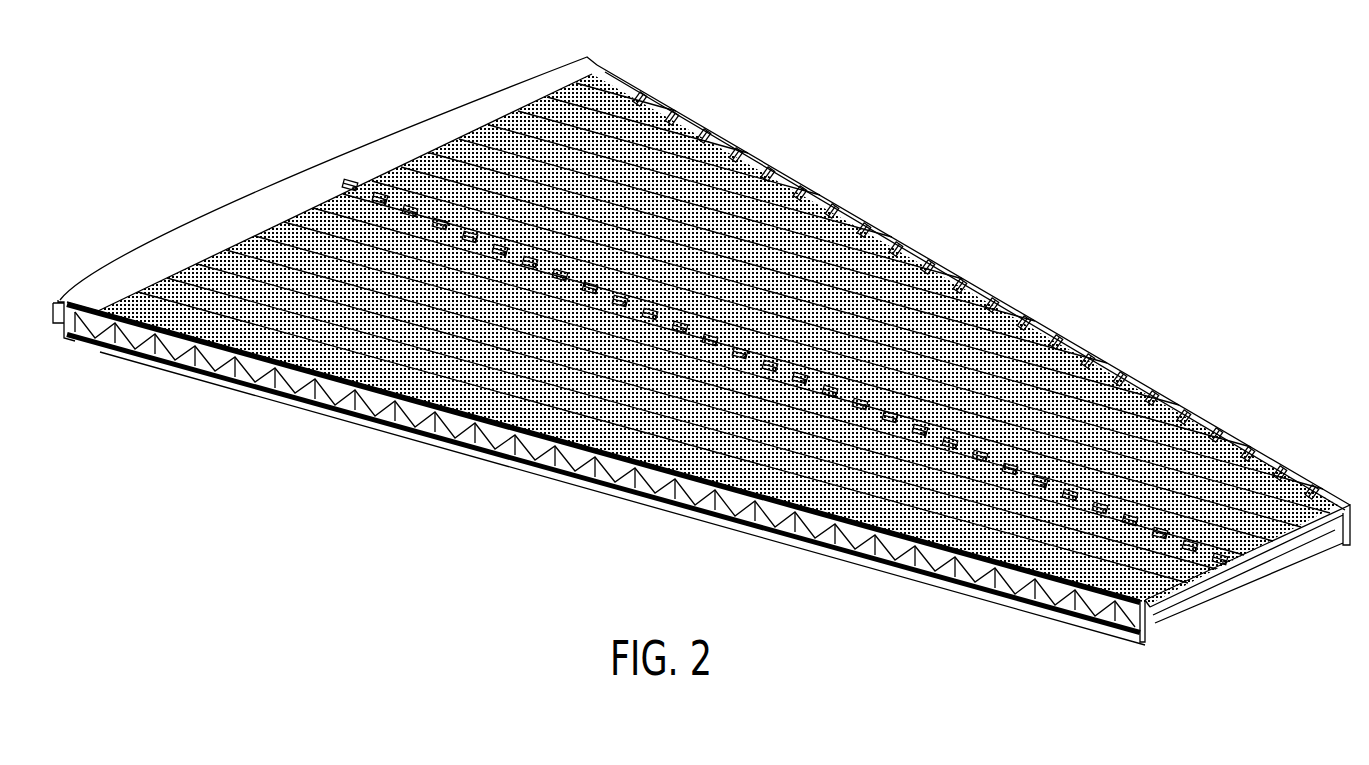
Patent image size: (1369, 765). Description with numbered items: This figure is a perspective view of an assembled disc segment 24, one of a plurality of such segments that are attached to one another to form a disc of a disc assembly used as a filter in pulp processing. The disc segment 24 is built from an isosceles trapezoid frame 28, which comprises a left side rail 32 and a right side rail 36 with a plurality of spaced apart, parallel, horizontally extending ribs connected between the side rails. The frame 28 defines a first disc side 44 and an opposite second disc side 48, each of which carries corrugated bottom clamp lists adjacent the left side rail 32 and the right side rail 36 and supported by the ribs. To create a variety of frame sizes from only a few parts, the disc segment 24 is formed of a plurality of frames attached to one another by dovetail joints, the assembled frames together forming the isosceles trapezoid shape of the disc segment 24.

The disc segment 24 is at (793, 118).
The isosceles trapezoid frame 28 is at (1102, 632).
The left side rail 32 is at (800, 537).
The right side rail 36 is at (1067, 355).
The first disc side 44 is at (1228, 450).
The second disc side 48 is at (1297, 550).